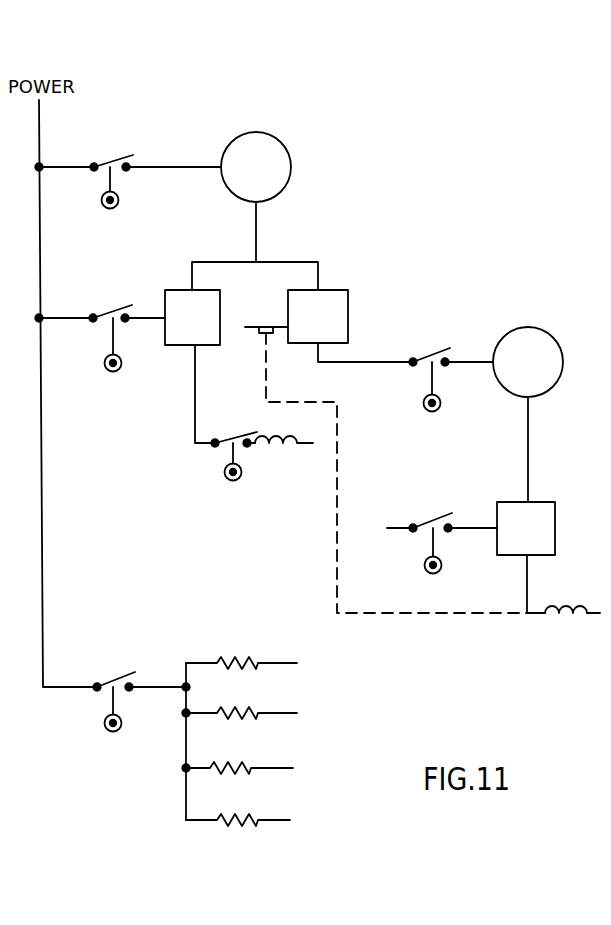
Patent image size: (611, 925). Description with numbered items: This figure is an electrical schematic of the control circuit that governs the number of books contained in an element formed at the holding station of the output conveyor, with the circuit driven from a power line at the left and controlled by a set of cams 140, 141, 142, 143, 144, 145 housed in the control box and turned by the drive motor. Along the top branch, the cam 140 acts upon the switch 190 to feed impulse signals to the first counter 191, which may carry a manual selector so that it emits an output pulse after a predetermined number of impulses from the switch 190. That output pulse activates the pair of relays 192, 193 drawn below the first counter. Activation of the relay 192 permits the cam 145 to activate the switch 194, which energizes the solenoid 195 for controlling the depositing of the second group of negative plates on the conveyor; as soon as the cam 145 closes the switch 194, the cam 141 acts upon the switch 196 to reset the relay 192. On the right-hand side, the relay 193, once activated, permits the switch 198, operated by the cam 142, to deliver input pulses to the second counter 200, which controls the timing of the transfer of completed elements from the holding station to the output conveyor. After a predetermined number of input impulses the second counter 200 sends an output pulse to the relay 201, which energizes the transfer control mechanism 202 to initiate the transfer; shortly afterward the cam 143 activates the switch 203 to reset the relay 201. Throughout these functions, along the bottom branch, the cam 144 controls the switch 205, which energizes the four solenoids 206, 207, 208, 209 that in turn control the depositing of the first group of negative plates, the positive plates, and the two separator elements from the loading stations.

The switch 190 is at (114, 156).
The cam 140 is at (117, 208).
The first counter 191 is at (292, 168).
The relay 192 is at (210, 299).
The relay 193 is at (348, 294).
The switch 196 is at (110, 310).
The cam 141 is at (113, 372).
The switch 194 is at (233, 432).
The cam 145 is at (226, 505).
The solenoid 195 is at (293, 443).
The switch 198 is at (440, 350).
The cam 142 is at (442, 408).
The second counter 200 is at (543, 333).
The relay 201 is at (542, 513).
The transfer control mechanism 202 is at (567, 617).
The switch 203 is at (432, 520).
The cam 143 is at (437, 573).
The switch 205 is at (113, 677).
The cam 144 is at (113, 733).
The solenoid 206 is at (255, 665).
The solenoid 207 is at (248, 713).
The solenoid 208 is at (245, 768).
The solenoid 209 is at (255, 820).